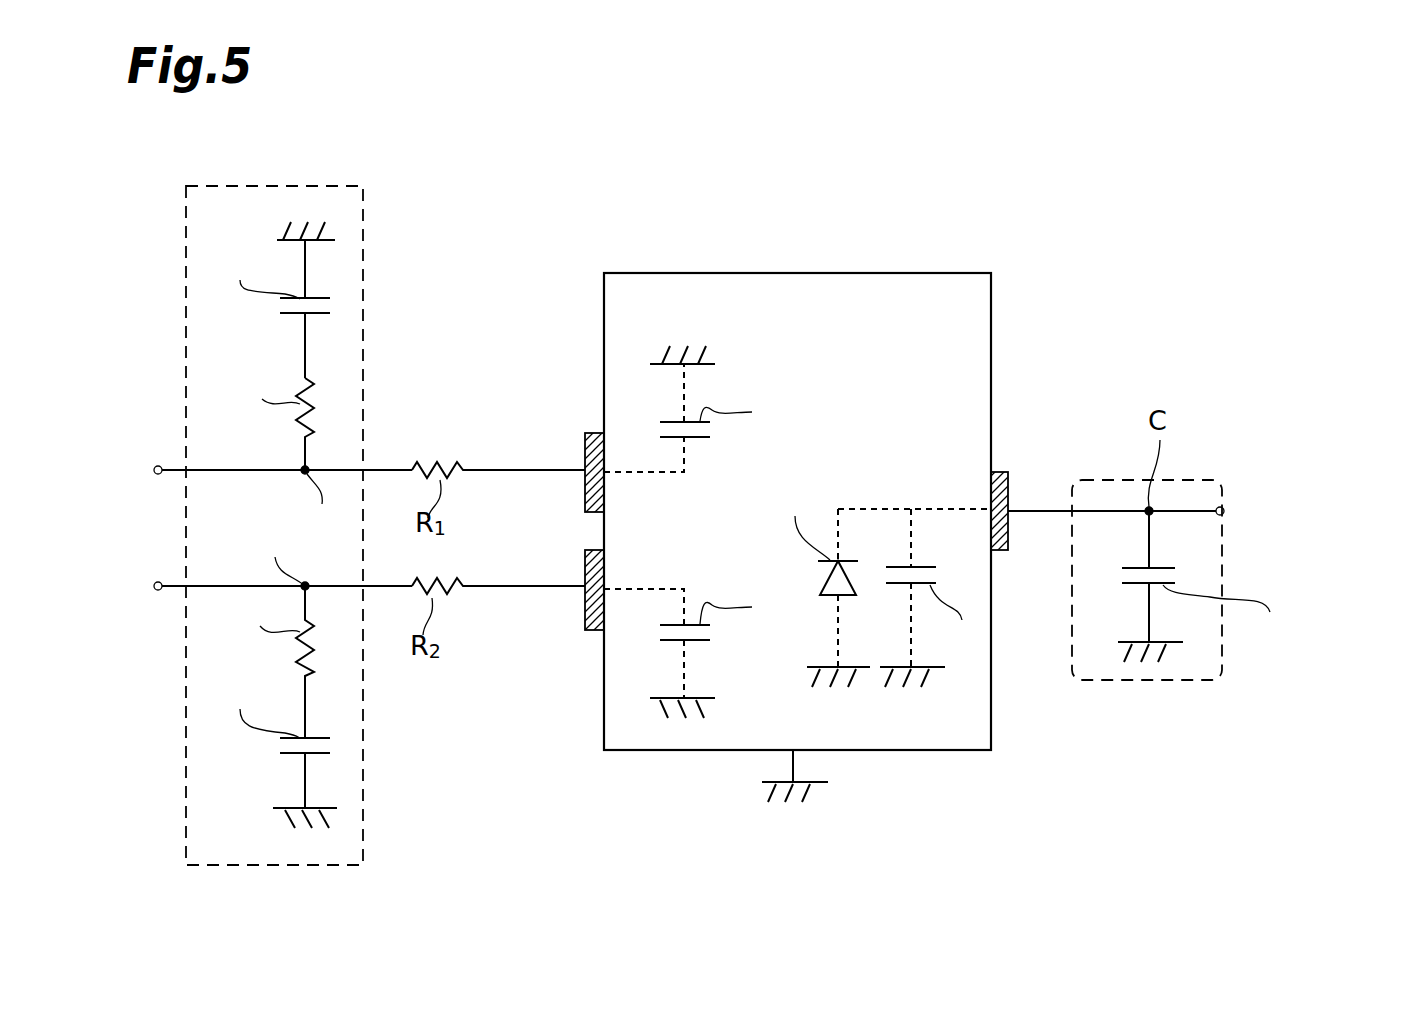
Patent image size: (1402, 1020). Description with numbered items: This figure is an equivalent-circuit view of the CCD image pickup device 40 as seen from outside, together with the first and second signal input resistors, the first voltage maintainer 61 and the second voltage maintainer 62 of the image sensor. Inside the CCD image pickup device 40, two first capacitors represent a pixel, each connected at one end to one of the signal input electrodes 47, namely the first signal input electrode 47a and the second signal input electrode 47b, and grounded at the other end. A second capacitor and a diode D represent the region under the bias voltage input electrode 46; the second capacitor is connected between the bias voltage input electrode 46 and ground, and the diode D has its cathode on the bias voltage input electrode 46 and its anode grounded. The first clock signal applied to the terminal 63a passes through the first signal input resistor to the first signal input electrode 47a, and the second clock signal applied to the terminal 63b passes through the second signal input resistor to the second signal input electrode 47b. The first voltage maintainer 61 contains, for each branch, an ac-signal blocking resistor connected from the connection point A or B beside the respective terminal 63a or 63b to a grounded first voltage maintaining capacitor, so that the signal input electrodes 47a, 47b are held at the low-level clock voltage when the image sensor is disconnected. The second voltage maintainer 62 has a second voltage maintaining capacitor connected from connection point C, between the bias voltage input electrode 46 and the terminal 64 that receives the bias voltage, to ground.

The CCD image pickup device 40 is at (973, 312).
The bias voltage input electrode 46 is at (1010, 481).
The input pads 47 is at (532, 481).
The first signal input electrode 47a is at (585, 448).
The second signal input electrode 47b is at (585, 571).
The first voltage maintainer 61 is at (277, 865).
The second voltage maintainer 62 is at (1158, 680).
The terminal 63a is at (157, 466).
The terminal 63b is at (158, 590).
The terminal 64 is at (1224, 506).